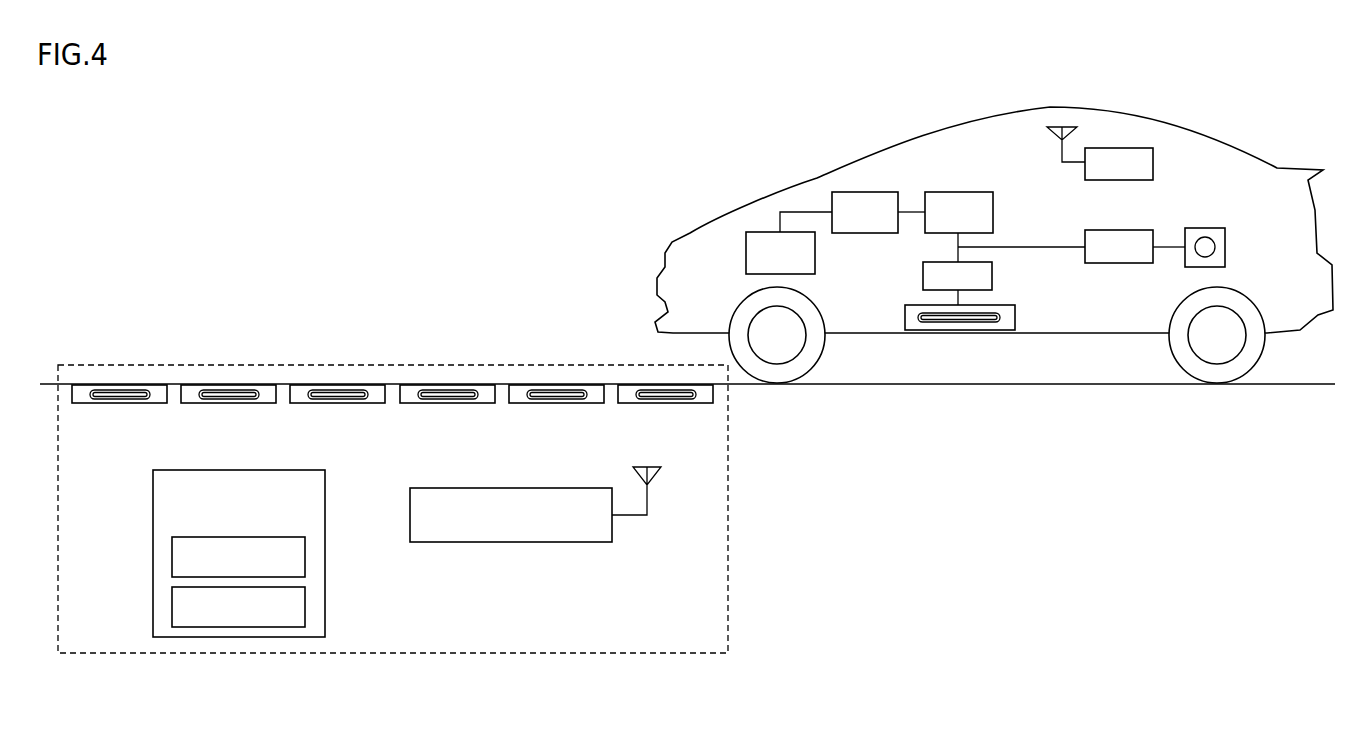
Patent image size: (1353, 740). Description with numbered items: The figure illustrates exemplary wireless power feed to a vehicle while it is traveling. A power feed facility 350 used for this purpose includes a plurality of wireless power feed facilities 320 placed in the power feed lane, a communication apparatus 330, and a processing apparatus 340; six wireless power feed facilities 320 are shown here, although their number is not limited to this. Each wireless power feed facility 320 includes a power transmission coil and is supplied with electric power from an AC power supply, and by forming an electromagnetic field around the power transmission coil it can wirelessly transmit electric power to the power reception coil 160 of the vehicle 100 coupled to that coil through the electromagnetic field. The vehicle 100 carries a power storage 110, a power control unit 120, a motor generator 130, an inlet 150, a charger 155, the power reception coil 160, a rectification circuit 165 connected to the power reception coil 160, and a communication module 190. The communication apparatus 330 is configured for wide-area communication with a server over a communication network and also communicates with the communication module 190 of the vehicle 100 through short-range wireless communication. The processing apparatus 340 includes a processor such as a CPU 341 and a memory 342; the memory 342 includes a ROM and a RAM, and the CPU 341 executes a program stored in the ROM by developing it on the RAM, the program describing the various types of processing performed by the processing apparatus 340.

The vehicle 100 is at (1215, 133).
The power storage 110 is at (962, 191).
The power control unit (PCU) 120 is at (867, 191).
The motor generator 130 is at (746, 253).
The inlet 150 is at (1203, 228).
The charger 155 is at (1117, 230).
The power reception coil 160 is at (960, 331).
The rectification circuit 165 is at (992, 275).
The communication module 190 is at (1153, 162).
The wireless power feed facility 320 is at (138, 404).
The communication apparatus 330 is at (585, 543).
The processing apparatus 340 is at (325, 490).
The processor (CPU) 341 is at (305, 527).
The memory 342 is at (305, 578).
The power feed facility 350 is at (532, 364).